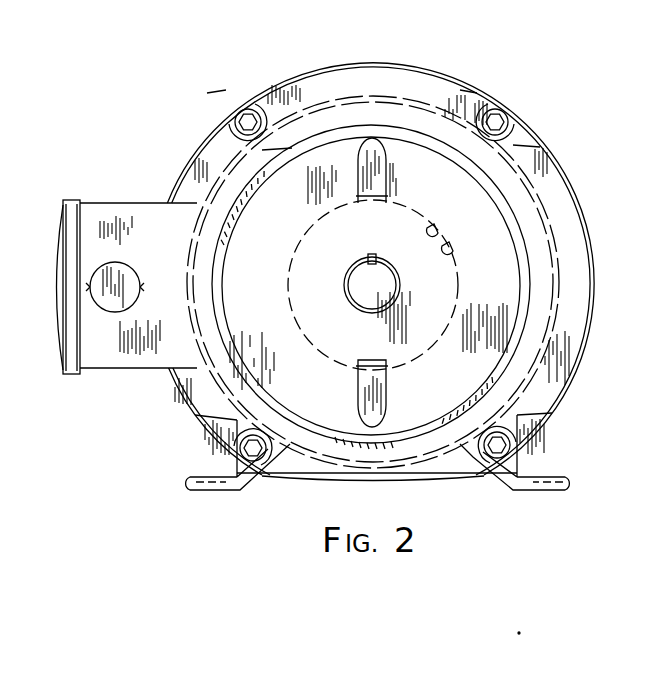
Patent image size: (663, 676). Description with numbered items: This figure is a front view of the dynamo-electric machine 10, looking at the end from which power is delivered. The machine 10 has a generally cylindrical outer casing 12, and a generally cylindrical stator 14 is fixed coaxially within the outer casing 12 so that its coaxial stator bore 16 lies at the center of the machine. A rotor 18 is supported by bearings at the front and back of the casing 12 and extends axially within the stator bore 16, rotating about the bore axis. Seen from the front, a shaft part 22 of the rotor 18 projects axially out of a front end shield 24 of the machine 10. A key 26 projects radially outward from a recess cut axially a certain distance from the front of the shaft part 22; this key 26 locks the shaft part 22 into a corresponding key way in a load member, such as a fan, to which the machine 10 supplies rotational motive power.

The dynamo-electric machine 10 is at (236, 68).
The outer casing 12 is at (424, 101).
The stator 14 is at (436, 222).
The stator bore 16 is at (452, 243).
The rotor 18 is at (457, 288).
The shaft part 22 is at (353, 270).
The front end shield 24 is at (323, 118).
The key 26 is at (375, 254).